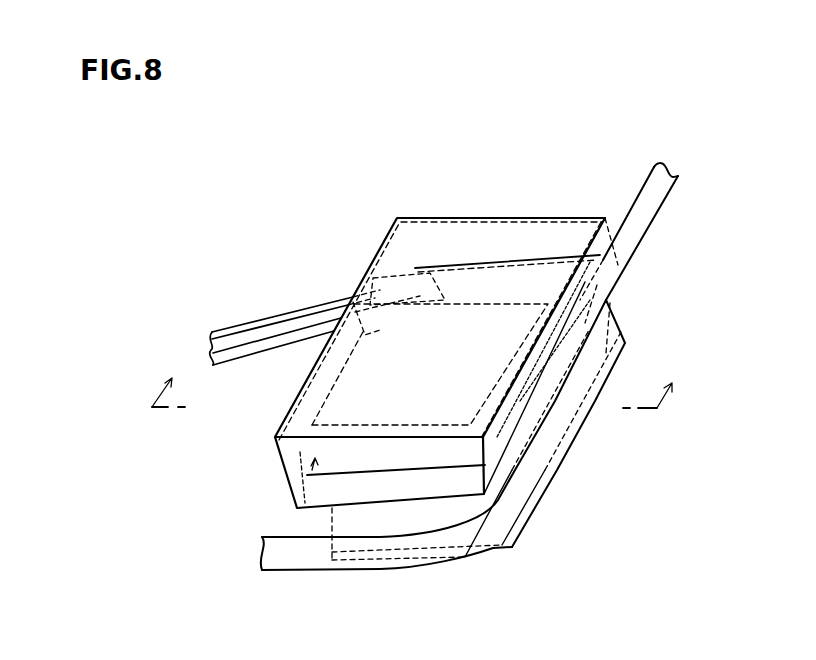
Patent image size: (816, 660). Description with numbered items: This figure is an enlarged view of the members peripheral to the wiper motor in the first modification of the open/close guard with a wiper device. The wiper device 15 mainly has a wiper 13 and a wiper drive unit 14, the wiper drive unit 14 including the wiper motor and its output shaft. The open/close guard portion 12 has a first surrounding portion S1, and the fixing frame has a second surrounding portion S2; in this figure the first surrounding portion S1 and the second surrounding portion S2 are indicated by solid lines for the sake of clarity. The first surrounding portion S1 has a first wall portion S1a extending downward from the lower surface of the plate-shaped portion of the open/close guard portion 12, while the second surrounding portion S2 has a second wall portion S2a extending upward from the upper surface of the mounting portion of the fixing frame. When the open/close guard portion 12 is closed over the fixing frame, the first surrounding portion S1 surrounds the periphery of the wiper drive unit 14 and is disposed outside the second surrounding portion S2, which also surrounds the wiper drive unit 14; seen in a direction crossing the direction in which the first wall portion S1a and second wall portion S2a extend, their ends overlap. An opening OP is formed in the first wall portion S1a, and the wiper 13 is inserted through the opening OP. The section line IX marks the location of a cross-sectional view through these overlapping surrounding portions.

The open/close guard portion 12 is at (578, 183).
The wiper 13 is at (310, 327).
The wiper drive unit 14 is at (472, 335).
The wiper device 15 is at (338, 452).
The opening OP is at (375, 280).
The first surrounding portion S1 is at (357, 453).
The second surrounding portion S2 is at (420, 513).
The first wall portion S1a is at (598, 247).
The second wall portion S2a is at (610, 330).
The section line IX- IX is at (419, 380).